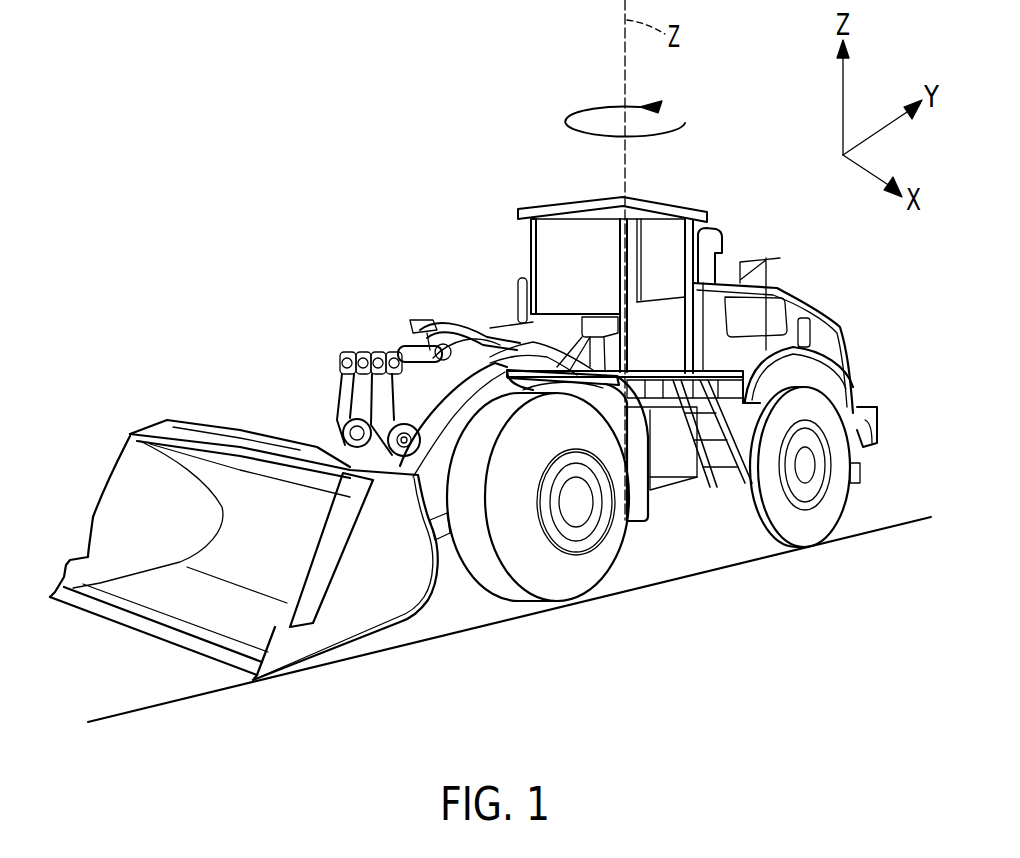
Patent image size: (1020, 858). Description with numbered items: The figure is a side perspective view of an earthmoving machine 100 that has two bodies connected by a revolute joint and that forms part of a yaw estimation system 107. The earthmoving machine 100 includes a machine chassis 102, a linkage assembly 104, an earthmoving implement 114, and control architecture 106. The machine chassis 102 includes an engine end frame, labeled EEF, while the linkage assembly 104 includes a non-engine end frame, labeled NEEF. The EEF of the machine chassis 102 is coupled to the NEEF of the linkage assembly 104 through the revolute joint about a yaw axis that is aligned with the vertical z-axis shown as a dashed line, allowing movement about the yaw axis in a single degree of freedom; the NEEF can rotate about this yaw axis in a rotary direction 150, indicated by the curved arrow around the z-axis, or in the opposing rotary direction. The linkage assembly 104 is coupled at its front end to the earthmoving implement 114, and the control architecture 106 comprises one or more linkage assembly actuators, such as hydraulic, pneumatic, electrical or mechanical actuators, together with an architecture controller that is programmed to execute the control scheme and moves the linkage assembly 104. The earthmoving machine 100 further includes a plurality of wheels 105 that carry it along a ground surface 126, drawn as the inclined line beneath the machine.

The earthmoving machine 100 is at (357, 147).
The machine chassis 102 is at (707, 216).
The linkage assembly 104 is at (487, 332).
The wheels 105 is at (845, 509).
The control architecture 106 is at (821, 379).
The yaw estimation system 107 is at (748, 350).
The earthmoving implement 114 is at (136, 434).
The ground surface 126 is at (908, 521).
The direction 150 is at (685, 123).